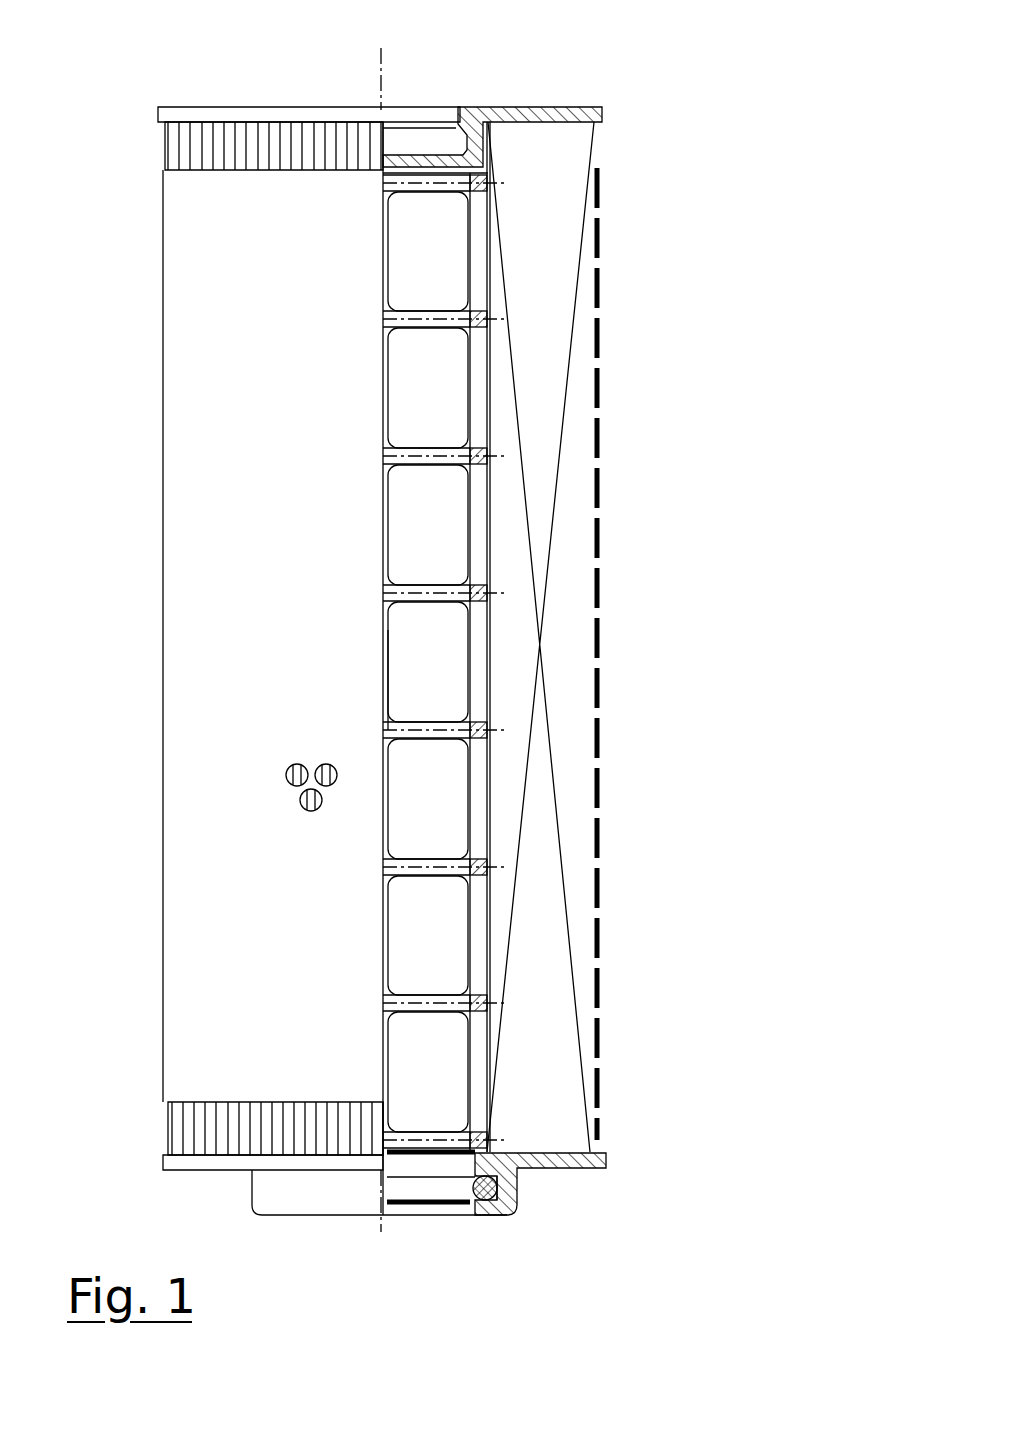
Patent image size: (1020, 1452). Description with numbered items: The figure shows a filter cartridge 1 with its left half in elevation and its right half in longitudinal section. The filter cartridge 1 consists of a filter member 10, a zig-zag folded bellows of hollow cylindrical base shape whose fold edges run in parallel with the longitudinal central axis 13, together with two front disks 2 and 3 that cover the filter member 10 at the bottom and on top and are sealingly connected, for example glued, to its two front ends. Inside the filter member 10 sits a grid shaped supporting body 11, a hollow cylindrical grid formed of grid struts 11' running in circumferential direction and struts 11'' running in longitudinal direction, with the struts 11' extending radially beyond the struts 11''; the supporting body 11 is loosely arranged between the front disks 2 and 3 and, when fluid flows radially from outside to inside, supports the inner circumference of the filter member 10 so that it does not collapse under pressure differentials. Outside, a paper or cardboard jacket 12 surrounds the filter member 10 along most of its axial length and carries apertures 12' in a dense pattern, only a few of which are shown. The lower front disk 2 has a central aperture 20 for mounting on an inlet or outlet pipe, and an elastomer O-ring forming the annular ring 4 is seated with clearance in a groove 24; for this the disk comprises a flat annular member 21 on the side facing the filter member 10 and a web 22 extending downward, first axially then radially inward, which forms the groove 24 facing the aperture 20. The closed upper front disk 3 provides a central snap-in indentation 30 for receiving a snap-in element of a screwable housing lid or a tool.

The filter cartridge 1 is at (153, 689).
The lower front disk 2 is at (167, 1197).
The upper front disk 3 is at (612, 114).
The annular ring 4 is at (470, 1183).
The filter member 10 is at (567, 533).
The supporting body 11 is at (559, 662).
The grid struts 11' is at (562, 661).
The grid struts 11'' is at (364, 671).
The jacket 12 is at (668, 654).
The apertures 12' is at (415, 800).
The longitudinal central axis 13 is at (382, 76).
The central aperture 20 is at (400, 1220).
The annular member 21 is at (540, 1150).
The web 22 is at (507, 1200).
The groove 24 is at (480, 1200).
The snap-in indentation 30 is at (442, 129).